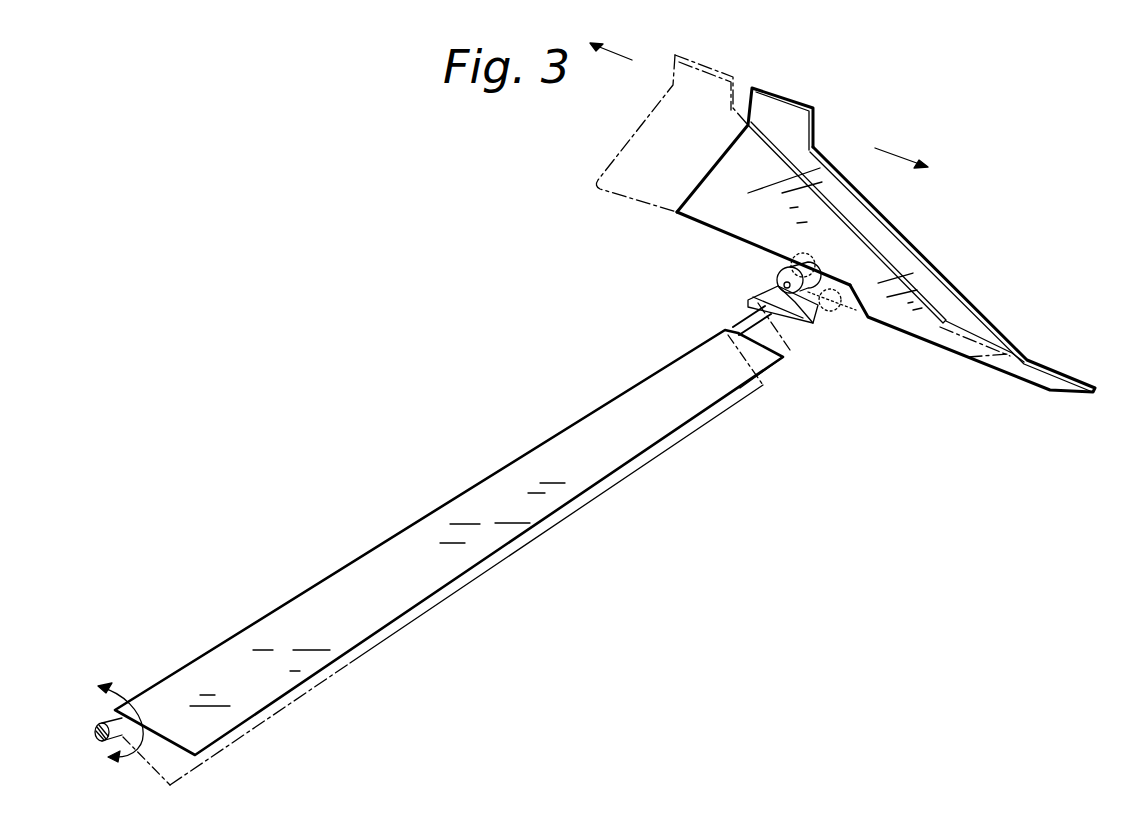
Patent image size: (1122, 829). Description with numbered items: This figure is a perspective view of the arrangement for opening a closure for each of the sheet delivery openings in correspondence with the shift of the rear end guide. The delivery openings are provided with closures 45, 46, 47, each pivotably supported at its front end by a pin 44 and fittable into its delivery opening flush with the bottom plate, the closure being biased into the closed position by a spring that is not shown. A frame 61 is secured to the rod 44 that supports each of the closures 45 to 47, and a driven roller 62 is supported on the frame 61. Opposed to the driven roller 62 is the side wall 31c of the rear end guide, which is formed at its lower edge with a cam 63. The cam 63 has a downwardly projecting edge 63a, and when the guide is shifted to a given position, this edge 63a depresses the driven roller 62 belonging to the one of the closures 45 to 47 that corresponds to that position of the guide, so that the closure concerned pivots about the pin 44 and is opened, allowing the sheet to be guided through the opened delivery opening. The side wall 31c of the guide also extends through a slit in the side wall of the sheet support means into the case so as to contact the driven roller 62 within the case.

The side wall 31c is at (740, 215).
The pin 44 is at (740, 326).
The closure 45 is at (439, 557).
The closure 46 is at (439, 557).
The closure 47 is at (363, 620).
The frame 61 is at (824, 335).
The driven roller 62 is at (817, 276).
The cam 63 is at (903, 333).
The downwardly projecting edge 63a is at (937, 347).